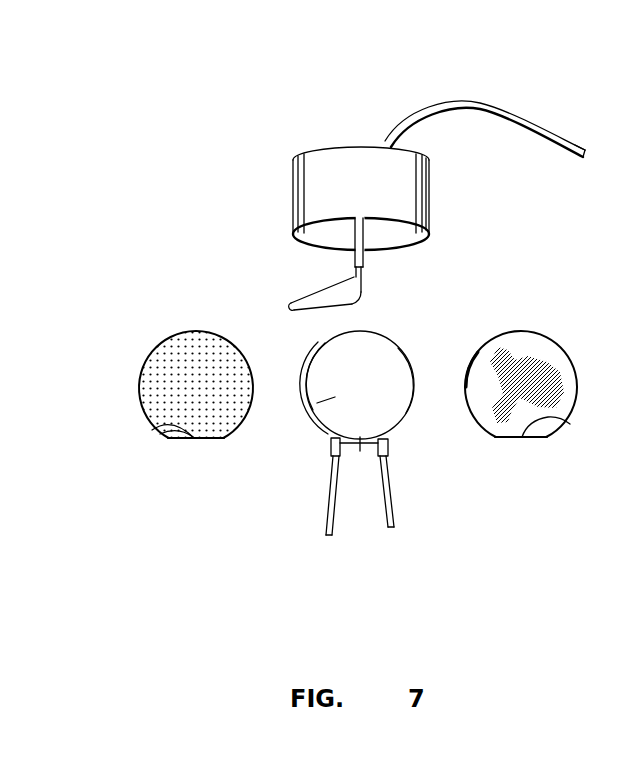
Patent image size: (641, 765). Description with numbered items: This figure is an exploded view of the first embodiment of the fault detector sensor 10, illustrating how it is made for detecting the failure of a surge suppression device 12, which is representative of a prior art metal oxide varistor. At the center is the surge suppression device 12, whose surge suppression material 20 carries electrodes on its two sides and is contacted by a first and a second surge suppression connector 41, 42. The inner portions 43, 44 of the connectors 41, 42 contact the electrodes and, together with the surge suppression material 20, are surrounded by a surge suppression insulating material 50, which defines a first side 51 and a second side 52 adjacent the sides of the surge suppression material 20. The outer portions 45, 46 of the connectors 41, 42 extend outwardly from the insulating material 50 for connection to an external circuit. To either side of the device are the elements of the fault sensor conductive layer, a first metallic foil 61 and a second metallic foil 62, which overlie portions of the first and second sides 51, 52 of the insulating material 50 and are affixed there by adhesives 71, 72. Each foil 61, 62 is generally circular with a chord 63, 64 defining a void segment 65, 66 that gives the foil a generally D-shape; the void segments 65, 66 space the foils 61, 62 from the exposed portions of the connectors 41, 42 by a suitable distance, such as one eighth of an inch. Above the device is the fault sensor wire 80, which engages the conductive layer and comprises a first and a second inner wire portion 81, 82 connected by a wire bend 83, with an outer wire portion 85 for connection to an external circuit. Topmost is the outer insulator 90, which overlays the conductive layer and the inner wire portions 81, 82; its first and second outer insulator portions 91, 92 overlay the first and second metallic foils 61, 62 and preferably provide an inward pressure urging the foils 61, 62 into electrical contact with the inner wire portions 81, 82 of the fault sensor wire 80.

The fault detector sensor 10 is at (191, 205).
The surge suppression device 12 is at (390, 351).
The surge suppression material 20 is at (304, 412).
The first surge suppression connector 41 is at (330, 489).
The second surge suppression connector 42 is at (392, 487).
The inner portion of first surge suppression connector 43 is at (317, 443).
The inner portion of second surge suppression connector 44 is at (400, 437).
The outer portion of first surge suppression connector 45 is at (326, 535).
The outer portion of second surge suppression connector 46 is at (395, 527).
The surge suppression insulating material 50 is at (359, 462).
The first side of surge suppression insulating material 51 is at (300, 370).
The second side of surge suppression insulating material 52 is at (396, 387).
The first metallic foil 61 is at (168, 440).
The second metallic foil 62 is at (555, 437).
The chord 63 is at (160, 430).
The chord 64 is at (562, 421).
The void segment 65 is at (196, 452).
The void segment 66 is at (525, 450).
The adhesive 71 is at (158, 385).
The adhesive 72 is at (562, 384).
The fault sensor wire 80 is at (470, 104).
The first inner wire portion 81 is at (330, 309).
The second inner wire portion 82 is at (318, 294).
The wire bend 83 is at (287, 308).
The outer wire portion 85 is at (573, 148).
The outer insulator 90 is at (294, 186).
The first outer insulator portion 91 is at (294, 205).
The second outer insulator portion 92 is at (430, 205).